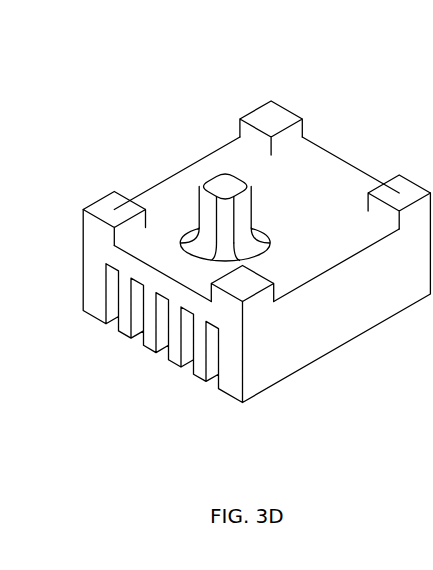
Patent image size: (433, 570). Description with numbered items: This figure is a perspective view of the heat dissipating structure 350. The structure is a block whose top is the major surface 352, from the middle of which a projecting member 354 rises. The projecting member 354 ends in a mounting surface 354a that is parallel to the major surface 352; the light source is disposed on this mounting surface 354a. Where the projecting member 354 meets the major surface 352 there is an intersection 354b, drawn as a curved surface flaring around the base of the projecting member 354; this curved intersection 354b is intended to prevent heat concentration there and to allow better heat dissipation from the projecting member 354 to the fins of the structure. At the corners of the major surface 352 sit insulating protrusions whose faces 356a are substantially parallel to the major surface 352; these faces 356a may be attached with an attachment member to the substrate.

The heat dissipating structure 350 is at (95, 49).
The major surface 352 is at (348, 204).
The projecting member 354 is at (213, 218).
The mounting surface 354a is at (218, 181).
The intersection 354b is at (212, 237).
The faces of the insulating protrusions 356a is at (110, 199).